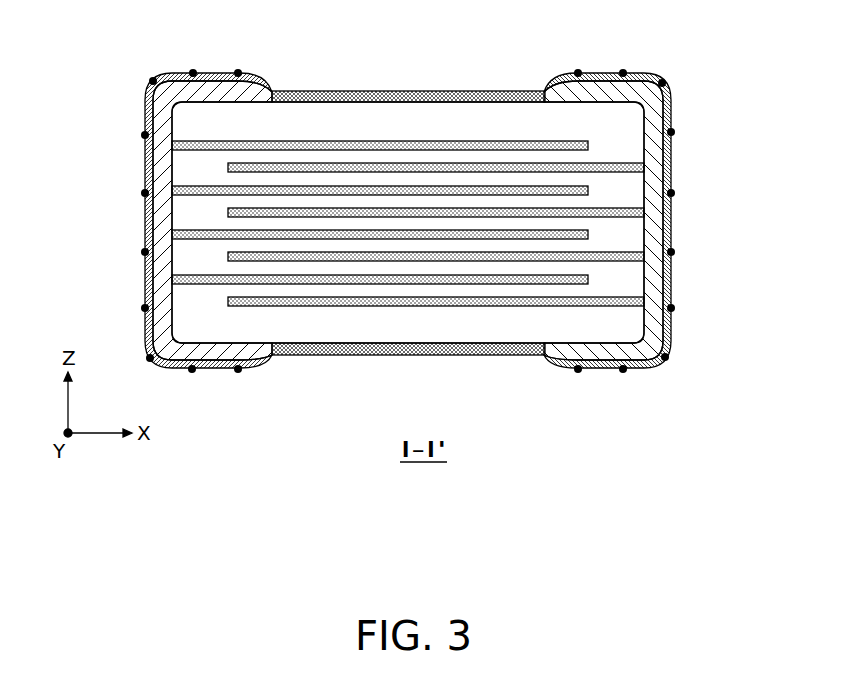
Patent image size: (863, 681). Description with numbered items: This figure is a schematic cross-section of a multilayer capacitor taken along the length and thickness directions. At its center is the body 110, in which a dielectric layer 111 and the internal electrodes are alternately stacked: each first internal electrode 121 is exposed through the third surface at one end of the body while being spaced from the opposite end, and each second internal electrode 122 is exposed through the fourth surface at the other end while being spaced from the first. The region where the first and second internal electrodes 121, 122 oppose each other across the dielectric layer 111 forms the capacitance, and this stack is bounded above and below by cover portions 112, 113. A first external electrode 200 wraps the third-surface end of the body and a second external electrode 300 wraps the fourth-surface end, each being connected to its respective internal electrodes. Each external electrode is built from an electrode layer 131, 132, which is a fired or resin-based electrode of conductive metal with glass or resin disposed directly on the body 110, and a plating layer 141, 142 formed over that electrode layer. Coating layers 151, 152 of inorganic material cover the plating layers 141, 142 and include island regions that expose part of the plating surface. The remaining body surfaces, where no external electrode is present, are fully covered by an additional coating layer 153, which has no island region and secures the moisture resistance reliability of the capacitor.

The body 110 is at (343, 91).
The dielectric layer 111 is at (292, 180).
The cover portion 112 is at (413, 118).
The cover portion 113 is at (368, 350).
The first internal electrode 121 is at (472, 140).
The second internal electrode 122 is at (533, 168).
The electrode layer 131 is at (157, 173).
The electrode layer 132 is at (665, 125).
The plating layer 141 is at (147, 228).
The plating layer 142 is at (670, 162).
The coating layer 151 is at (238, 374).
The coating layer 152 is at (577, 374).
The additional coating layer 153 is at (285, 90).
The first external electrode 200 is at (142, 220).
The second external electrode 300 is at (677, 220).